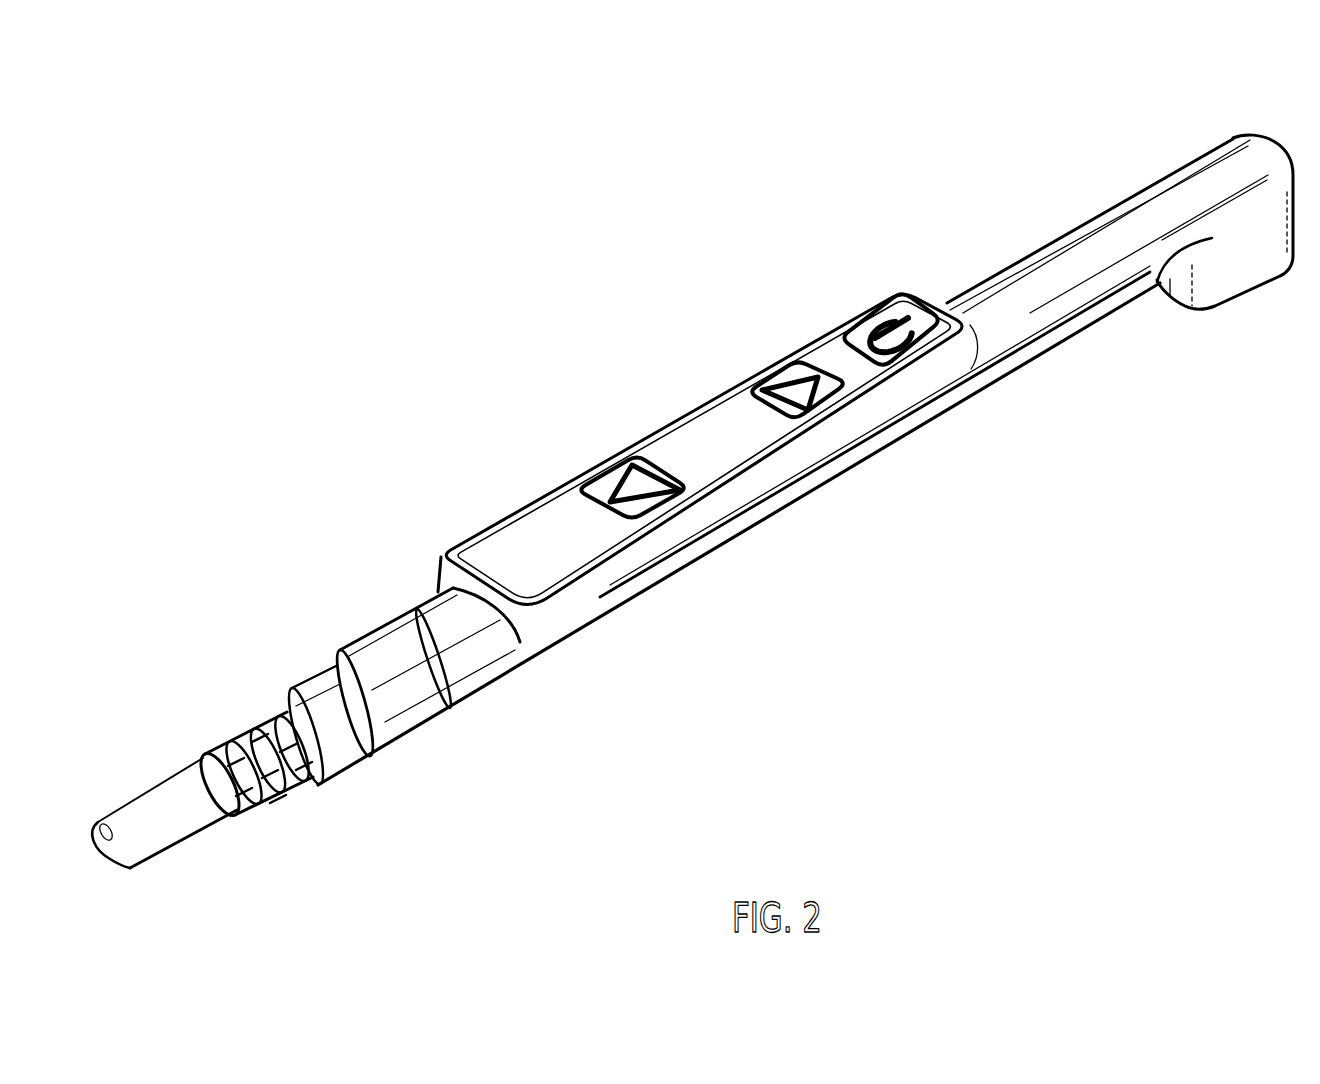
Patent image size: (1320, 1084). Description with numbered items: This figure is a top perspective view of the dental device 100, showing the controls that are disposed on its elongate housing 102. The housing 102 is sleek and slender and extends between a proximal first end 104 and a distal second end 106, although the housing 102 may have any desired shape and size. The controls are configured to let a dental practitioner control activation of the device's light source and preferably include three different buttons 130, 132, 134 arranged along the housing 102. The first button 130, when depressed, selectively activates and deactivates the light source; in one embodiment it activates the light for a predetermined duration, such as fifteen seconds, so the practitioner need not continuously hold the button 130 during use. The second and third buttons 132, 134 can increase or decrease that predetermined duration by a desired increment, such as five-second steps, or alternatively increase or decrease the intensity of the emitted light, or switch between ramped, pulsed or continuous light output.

The dental device 100 is at (775, 550).
The elongate housing 102 is at (1043, 327).
The proximal first end 104 is at (306, 661).
The distal second end 106 is at (1153, 149).
The first button 130 is at (848, 337).
The second button 132 is at (790, 378).
The third button 134 is at (603, 483).